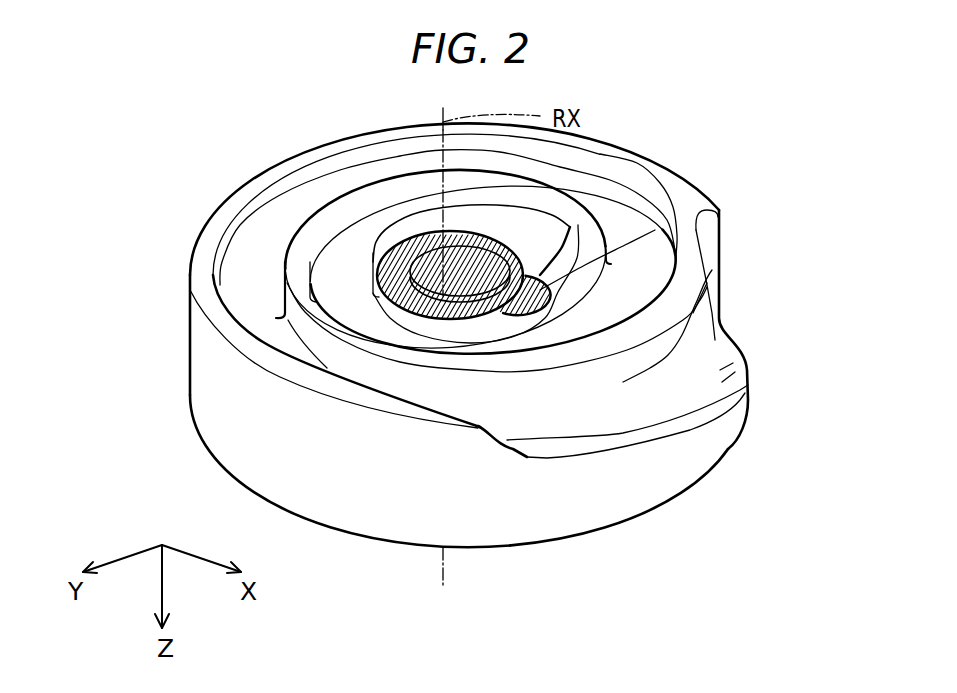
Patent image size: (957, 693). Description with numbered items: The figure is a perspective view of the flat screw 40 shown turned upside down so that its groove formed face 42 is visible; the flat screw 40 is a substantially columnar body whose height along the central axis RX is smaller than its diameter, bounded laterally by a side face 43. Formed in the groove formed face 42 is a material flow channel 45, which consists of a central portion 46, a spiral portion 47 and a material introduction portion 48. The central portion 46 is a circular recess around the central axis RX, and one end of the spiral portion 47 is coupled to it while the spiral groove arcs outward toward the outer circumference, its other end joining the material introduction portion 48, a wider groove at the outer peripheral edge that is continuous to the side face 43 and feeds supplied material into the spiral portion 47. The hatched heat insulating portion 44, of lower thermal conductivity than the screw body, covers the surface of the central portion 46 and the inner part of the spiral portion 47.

The flat screw 40 is at (147, 150).
The groove formed face 42 is at (242, 176).
The side face 43 is at (263, 417).
The heat insulating portion 44 is at (548, 300).
The material flow channel 45 is at (810, 143).
The central portion 46 is at (497, 233).
The spiral portion 47 is at (625, 233).
The material introduction portion 48 is at (712, 270).